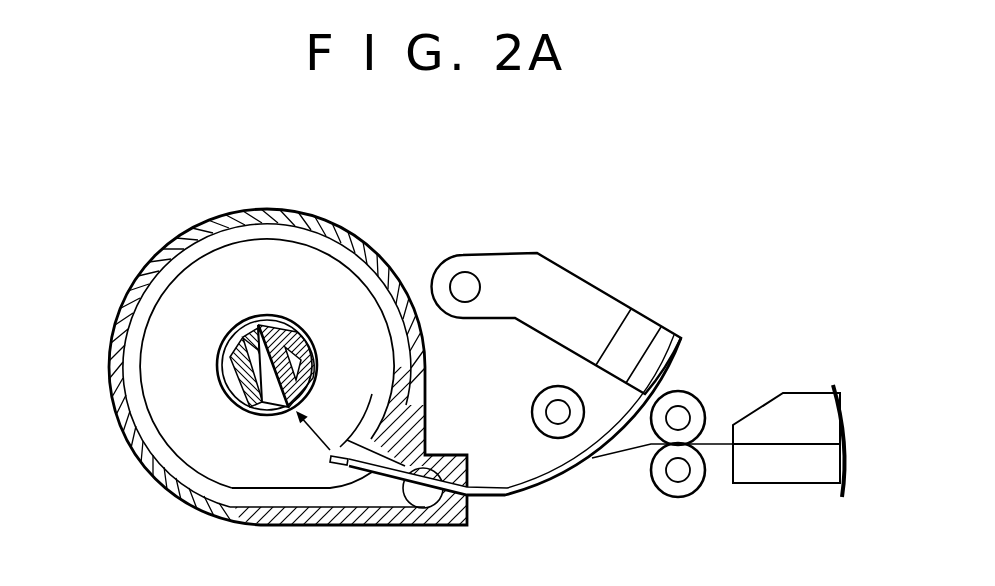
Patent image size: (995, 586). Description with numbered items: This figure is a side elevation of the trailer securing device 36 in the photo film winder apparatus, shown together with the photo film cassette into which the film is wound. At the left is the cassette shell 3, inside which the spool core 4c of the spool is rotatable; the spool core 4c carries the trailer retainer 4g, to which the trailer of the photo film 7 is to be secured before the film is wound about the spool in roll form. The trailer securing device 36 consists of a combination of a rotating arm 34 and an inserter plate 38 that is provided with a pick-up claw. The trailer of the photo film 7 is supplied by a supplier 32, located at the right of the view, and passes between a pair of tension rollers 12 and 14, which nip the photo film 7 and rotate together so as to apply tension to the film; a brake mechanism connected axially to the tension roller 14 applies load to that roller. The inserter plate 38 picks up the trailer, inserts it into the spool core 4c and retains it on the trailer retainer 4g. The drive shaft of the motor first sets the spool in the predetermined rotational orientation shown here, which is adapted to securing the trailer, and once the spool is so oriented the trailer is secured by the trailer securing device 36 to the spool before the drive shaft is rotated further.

The cassette shell 3 is at (110, 326).
The spool core 4c is at (248, 318).
The trailer retainer 4g is at (280, 410).
The inserter plate 38 is at (334, 455).
The photo film 7 is at (622, 450).
The rotating arm 34 is at (600, 302).
The trailer securing device 36 is at (508, 478).
The tension roller 12 is at (685, 403).
The tension roller 14 is at (690, 484).
The supplier 32 is at (800, 484).